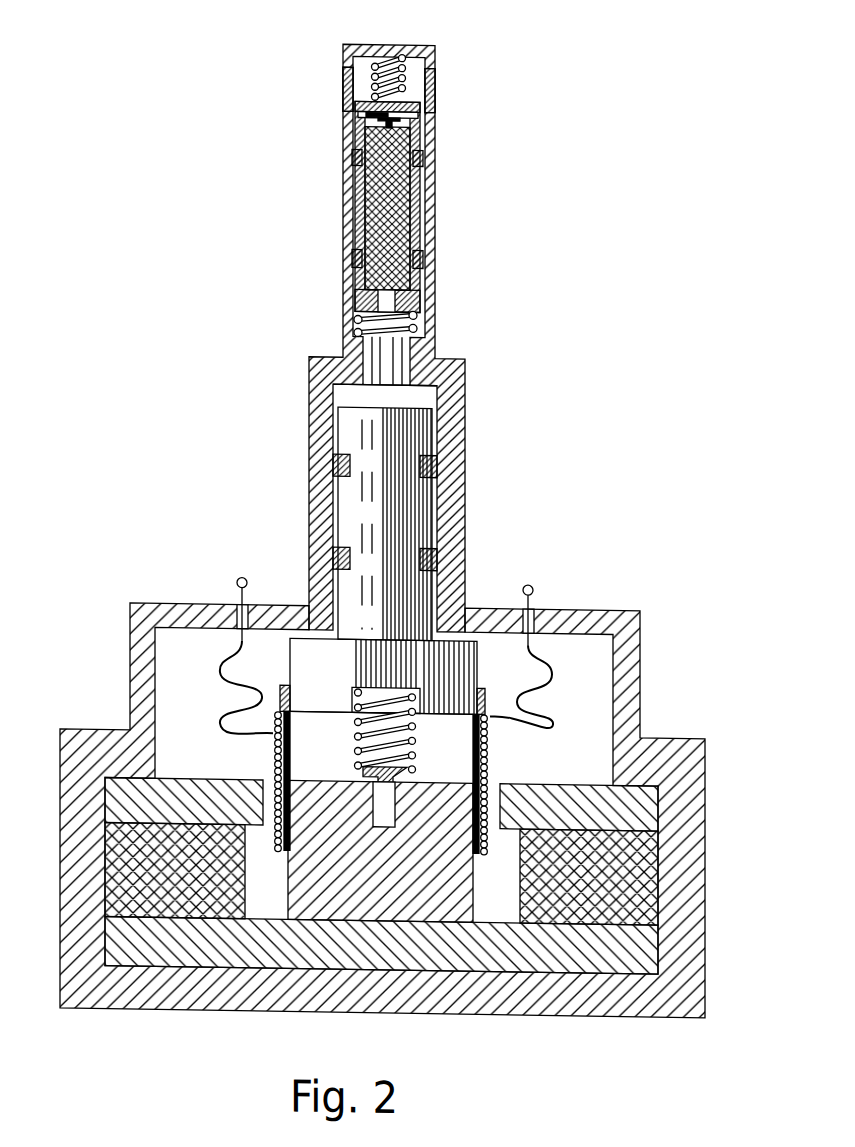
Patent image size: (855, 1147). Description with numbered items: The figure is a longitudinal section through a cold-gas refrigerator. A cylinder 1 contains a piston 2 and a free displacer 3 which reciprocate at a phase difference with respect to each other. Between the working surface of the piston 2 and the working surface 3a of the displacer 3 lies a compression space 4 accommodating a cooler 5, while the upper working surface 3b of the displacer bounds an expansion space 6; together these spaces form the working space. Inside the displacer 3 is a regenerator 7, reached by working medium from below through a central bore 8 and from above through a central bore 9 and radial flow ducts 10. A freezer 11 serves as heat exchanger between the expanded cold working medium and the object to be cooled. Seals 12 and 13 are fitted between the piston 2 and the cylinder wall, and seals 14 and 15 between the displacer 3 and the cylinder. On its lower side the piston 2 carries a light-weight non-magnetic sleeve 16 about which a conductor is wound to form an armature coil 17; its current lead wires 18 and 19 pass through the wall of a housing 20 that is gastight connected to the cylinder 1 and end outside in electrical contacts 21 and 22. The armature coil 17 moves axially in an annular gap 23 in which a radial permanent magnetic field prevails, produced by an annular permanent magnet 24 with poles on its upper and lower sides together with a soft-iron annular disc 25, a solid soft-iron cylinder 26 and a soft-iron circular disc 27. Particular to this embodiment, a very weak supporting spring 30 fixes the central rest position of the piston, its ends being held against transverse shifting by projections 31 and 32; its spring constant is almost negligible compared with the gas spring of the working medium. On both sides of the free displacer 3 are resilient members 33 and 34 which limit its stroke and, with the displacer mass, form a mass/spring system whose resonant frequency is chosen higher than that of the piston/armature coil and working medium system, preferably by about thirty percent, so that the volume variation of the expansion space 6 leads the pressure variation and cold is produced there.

The cylinder 1 is at (322, 498).
The piston 2 is at (392, 520).
The free displacer 3 is at (413, 205).
The working surface of displacer 3a is at (412, 313).
The upper working surface of displacer 3b is at (412, 101).
The compression space 4 is at (403, 398).
The cooler 5 is at (395, 353).
The expansion space 6 is at (417, 65).
The regenerator 7 is at (385, 195).
The central bore 8 is at (387, 298).
The central bore 9 is at (383, 128).
The radial flow ducts 10 is at (385, 116).
The freezer 11 is at (345, 77).
The seal 12 is at (427, 558).
The seal 13 is at (428, 467).
The seal 14 is at (425, 257).
The seal 15 is at (425, 157).
The sleeve 16 is at (283, 720).
The armature coil 17 is at (272, 760).
The current lead wire 18 is at (220, 690).
The current lead wire 19 is at (550, 695).
The housing 20 is at (150, 683).
The electrical contact 21 is at (240, 580).
The electrical contact 22 is at (532, 584).
The annular gap 23 is at (499, 800).
The annular permanent magnet 24 is at (620, 888).
The soft-iron annular disc 25 is at (553, 807).
The solid soft-iron cylinder 26 is at (437, 892).
The soft-iron circular disc 27 is at (495, 950).
The supporting spring 30 is at (415, 753).
The projection 31 is at (413, 725).
The projection 32 is at (362, 773).
The resilient member 33 is at (405, 80).
The resilient member 34 is at (417, 328).